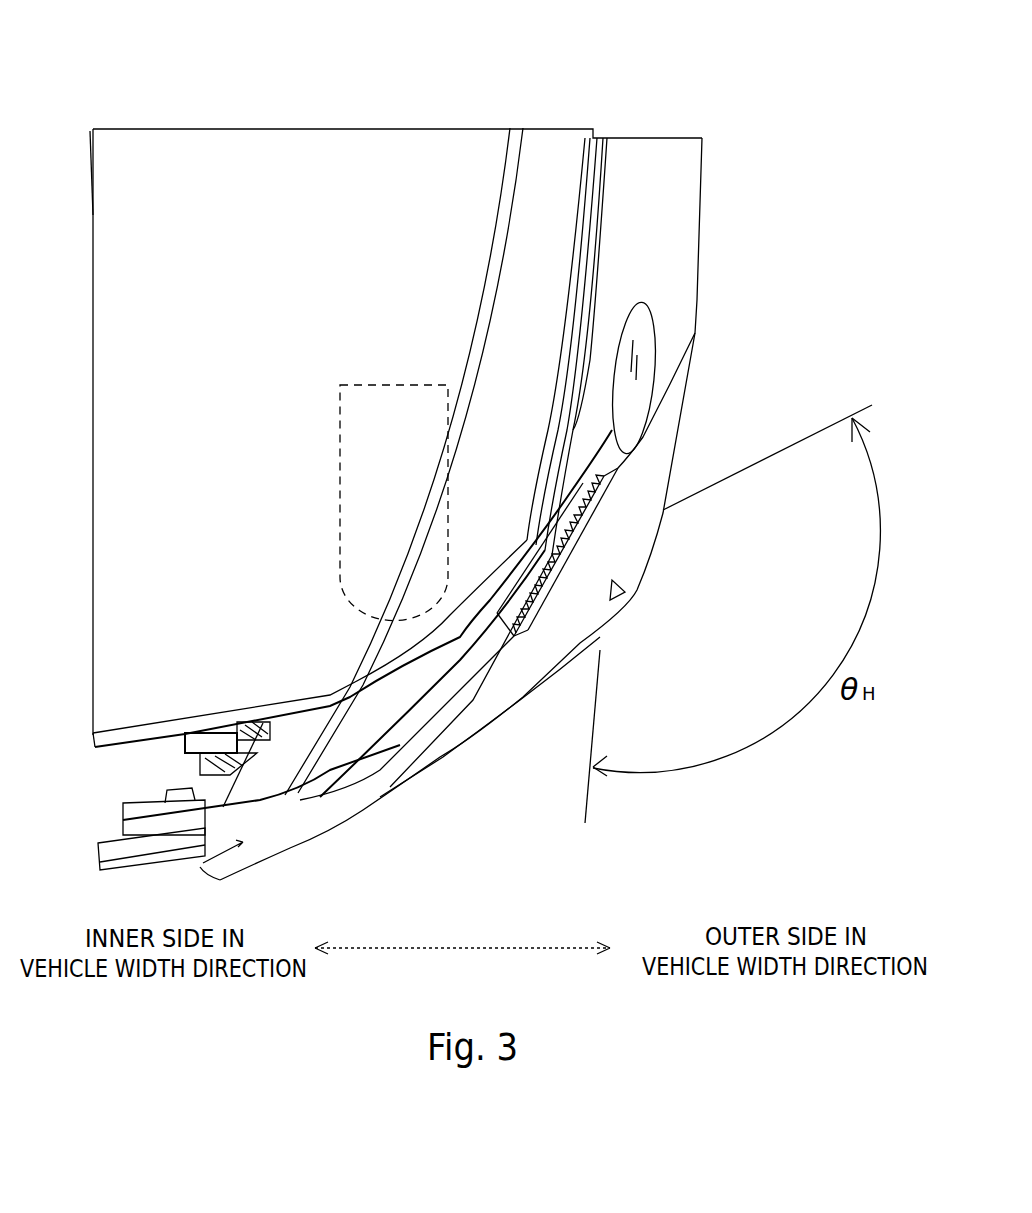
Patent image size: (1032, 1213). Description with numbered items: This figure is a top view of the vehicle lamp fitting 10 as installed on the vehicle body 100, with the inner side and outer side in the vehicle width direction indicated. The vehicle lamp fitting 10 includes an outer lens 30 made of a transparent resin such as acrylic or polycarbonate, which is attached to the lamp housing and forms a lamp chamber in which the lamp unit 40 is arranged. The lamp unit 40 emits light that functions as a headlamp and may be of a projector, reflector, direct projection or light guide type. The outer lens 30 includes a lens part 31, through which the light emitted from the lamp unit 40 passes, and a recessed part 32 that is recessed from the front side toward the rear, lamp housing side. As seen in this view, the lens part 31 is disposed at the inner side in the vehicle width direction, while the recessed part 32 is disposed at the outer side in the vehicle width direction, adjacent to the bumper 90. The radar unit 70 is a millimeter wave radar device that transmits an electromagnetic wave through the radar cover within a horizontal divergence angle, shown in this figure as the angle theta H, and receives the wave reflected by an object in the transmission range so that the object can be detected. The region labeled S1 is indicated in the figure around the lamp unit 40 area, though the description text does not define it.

The vehicle lamp fitting 10 is at (407, 108).
The vehicle body 100 is at (252, 128).
The lamp unit 40 is at (393, 383).
The radar unit 70 is at (600, 533).
The bumper 90 is at (648, 572).
The recessed part 32 is at (623, 593).
The lens part 31 is at (428, 743).
The outer lens 30 is at (350, 797).
The installation space S1 is at (313, 362).